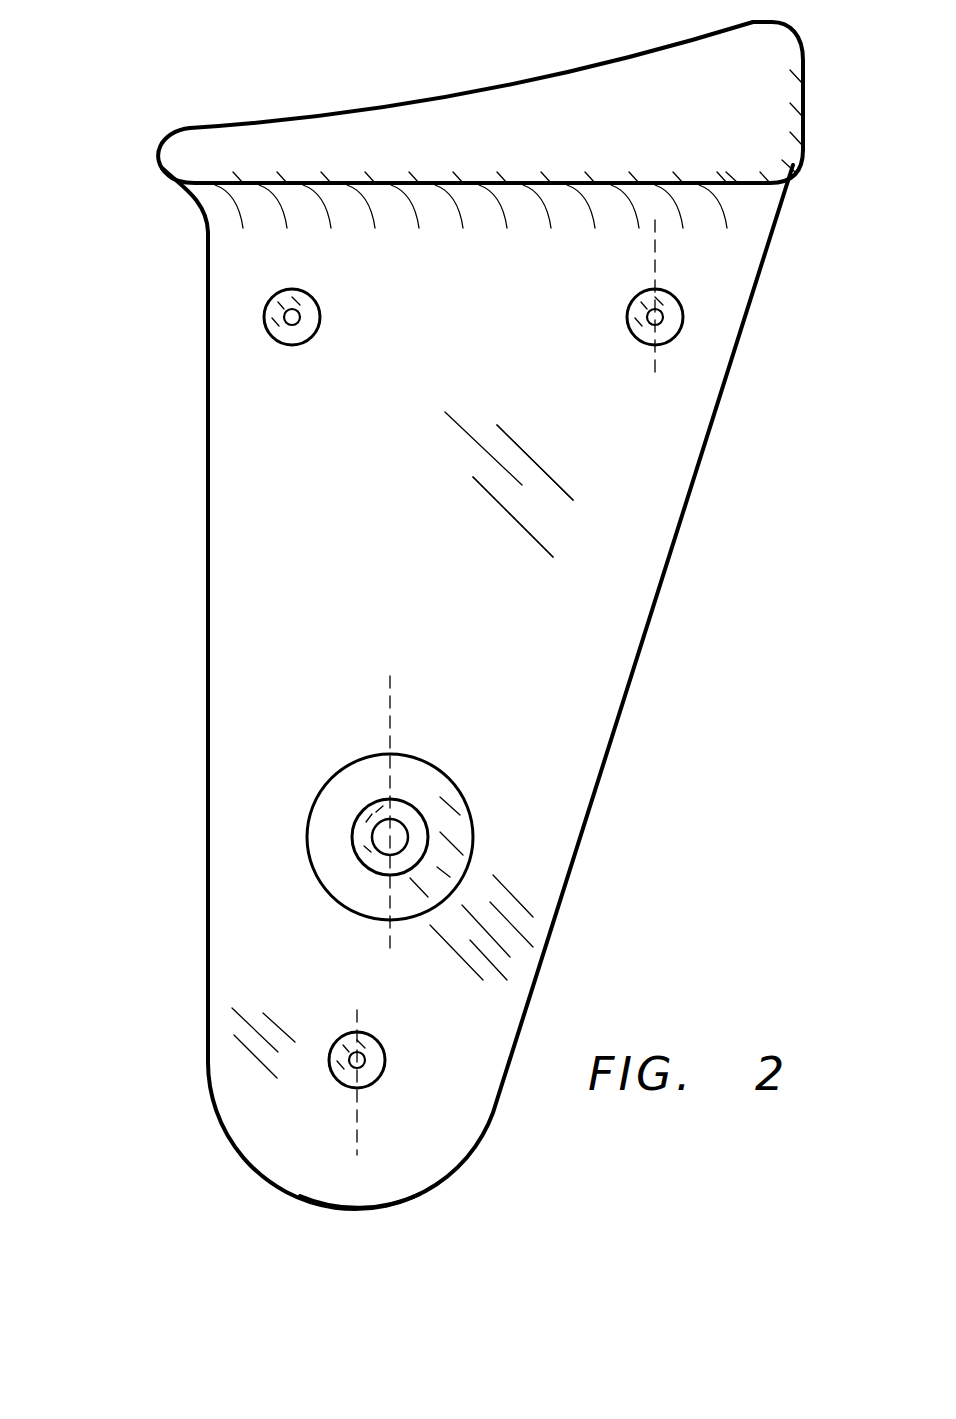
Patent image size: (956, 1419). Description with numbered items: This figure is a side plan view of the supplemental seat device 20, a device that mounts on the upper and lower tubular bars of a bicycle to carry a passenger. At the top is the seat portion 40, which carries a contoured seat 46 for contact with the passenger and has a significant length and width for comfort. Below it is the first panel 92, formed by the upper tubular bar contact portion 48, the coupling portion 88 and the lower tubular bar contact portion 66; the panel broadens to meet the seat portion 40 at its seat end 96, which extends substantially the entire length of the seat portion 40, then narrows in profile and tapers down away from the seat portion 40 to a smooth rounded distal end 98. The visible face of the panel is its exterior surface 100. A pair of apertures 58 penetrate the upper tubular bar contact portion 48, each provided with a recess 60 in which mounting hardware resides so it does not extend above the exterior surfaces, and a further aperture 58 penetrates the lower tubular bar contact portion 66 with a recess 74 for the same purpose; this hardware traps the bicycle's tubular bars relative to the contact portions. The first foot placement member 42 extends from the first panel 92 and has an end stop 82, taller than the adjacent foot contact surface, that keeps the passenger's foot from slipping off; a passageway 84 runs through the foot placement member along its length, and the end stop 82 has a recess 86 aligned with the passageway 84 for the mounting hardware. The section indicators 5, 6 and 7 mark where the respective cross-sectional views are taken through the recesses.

The supplemental seat device 20 is at (210, 23).
The seat portion 40 is at (652, 86).
The first foot placement member 42 is at (473, 820).
The seat 46 is at (277, 122).
The upper tubular bar contact portion 48 is at (430, 307).
The aperture 58 is at (290, 322).
The recess 60 is at (272, 311).
The lower tubular bar contact portion 66 is at (314, 972).
The recess 74 is at (377, 1057).
The end stop 82 is at (330, 804).
The passageway 84 is at (375, 838).
The recess 86 is at (375, 865).
The coupling portion 88 is at (467, 549).
The first panel 92 is at (611, 538).
The seat end 96 is at (440, 232).
The smooth rounded distal end 98 is at (360, 1173).
The exterior surface 100 is at (578, 620).
The section line 5- 5 is at (618, 260).
The section line 6- 6 is at (355, 713).
The section line 7- 7 is at (320, 1117).